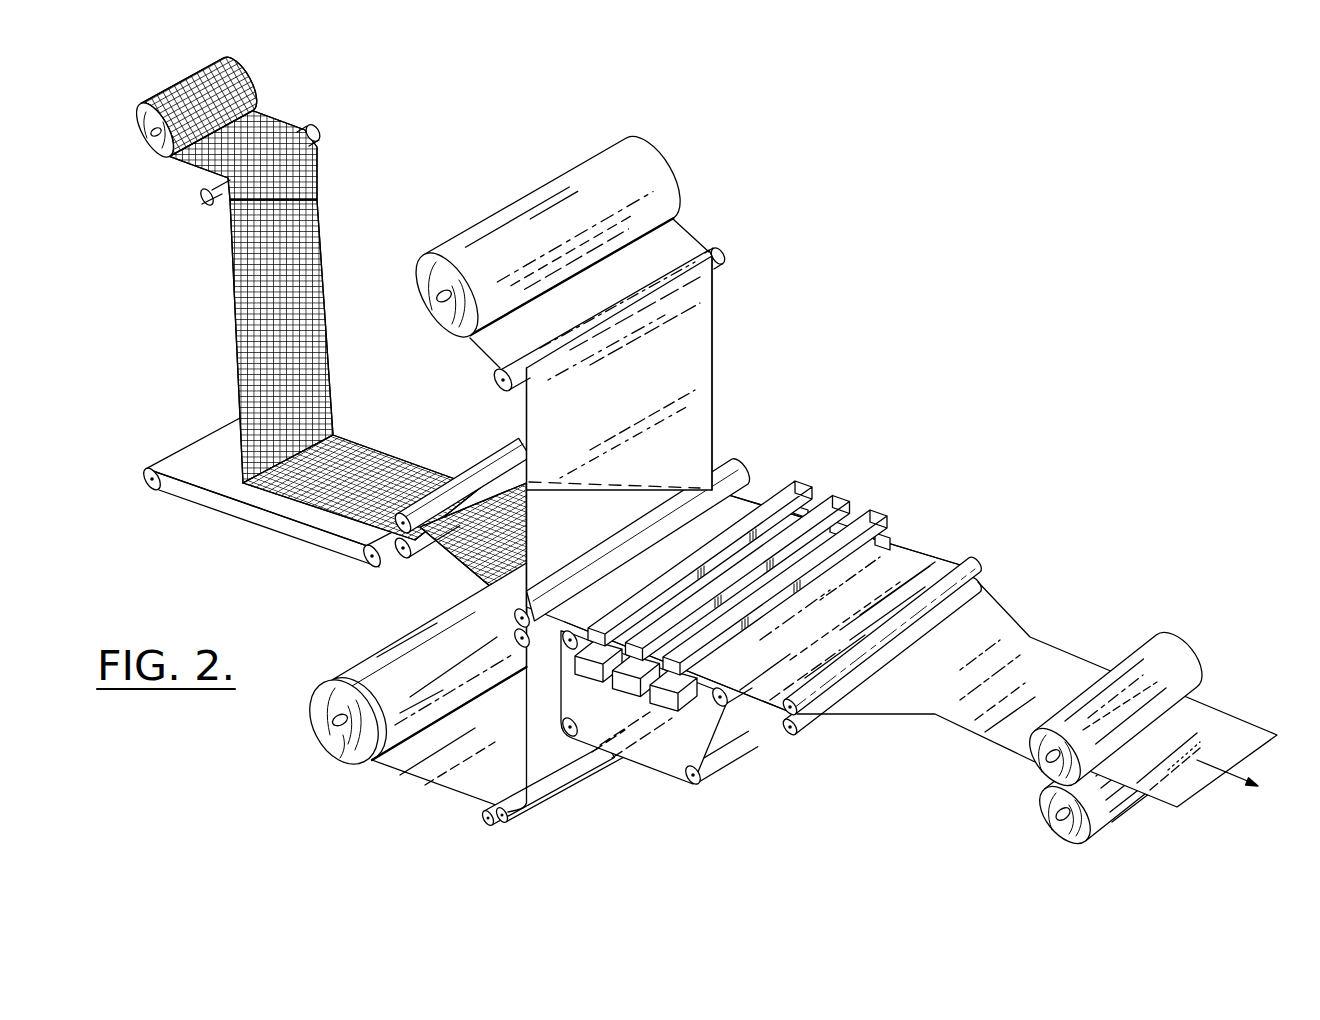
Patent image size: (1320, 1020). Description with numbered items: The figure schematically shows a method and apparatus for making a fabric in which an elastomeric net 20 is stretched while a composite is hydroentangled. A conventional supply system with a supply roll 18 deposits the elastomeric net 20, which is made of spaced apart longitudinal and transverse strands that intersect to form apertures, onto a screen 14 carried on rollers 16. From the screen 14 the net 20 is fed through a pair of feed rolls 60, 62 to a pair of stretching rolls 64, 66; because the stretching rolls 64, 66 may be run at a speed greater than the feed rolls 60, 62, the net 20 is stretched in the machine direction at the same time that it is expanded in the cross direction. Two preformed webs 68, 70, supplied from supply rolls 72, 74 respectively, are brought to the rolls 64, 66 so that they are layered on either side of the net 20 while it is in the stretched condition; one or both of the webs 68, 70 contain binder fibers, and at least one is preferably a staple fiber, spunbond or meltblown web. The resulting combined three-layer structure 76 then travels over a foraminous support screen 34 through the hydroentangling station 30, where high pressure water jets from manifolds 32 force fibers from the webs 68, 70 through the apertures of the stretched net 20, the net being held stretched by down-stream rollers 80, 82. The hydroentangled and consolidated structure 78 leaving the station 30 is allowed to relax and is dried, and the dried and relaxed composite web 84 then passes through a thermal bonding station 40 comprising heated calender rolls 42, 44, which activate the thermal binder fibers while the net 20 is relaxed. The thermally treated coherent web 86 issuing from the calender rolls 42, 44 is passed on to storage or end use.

The screen 14 is at (194, 452).
The conveyor rollers 16 is at (153, 486).
The supply roll 18 is at (253, 88).
The elastomeric net 20 is at (316, 230).
The hydroentangling station 30 is at (903, 430).
The manifolds 32 is at (873, 520).
The foraminous support screen 34 is at (663, 768).
The thermal bonding station 40 is at (1211, 633).
The heated calender roll 42 is at (1038, 760).
The heated calender roll 44 is at (1063, 820).
The feed roll 60 is at (403, 563).
The feed roll 62 is at (410, 540).
The stretching roll 64 is at (518, 618).
The stretching roll 66 is at (517, 638).
The preformed web 68 is at (700, 322).
The preformed web 70 is at (450, 783).
The supply roll 72 is at (641, 170).
The supply roll 74 is at (338, 737).
The combined 3-layer structure 76 is at (745, 505).
The hydroentangled and consolidated structure 78 is at (890, 562).
The down-stream roller 80 is at (972, 568).
The down-stream roller 82 is at (980, 588).
The dried and relaxed composite web 84 is at (1040, 657).
The thermally treated coherent web 86 is at (1227, 732).